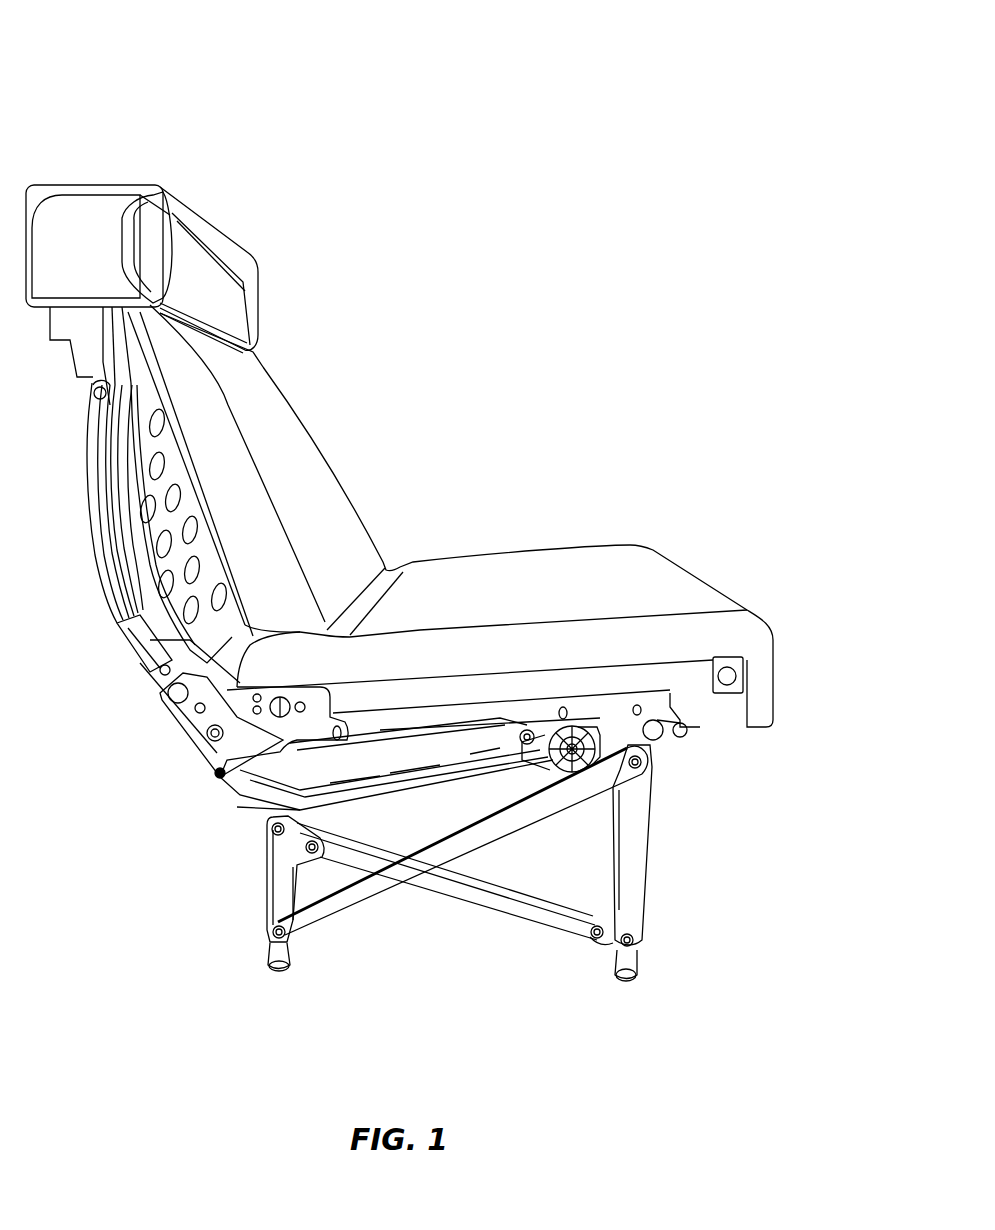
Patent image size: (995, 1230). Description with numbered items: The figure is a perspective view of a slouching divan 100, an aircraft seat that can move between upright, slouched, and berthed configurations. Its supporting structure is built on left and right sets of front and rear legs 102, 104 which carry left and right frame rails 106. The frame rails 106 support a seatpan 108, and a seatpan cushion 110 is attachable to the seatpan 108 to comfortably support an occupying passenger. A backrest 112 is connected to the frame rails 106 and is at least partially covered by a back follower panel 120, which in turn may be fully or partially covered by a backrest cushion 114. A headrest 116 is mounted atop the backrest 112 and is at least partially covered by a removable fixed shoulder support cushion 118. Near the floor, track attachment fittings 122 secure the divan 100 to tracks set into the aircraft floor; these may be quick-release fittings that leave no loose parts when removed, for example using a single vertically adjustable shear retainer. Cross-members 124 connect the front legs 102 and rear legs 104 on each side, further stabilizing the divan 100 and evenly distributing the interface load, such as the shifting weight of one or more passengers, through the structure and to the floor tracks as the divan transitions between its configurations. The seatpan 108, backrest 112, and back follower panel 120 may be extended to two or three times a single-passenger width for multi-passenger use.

The slouching divan 100 is at (87, 59).
The front leg 102 is at (630, 882).
The rear leg 104 is at (277, 906).
The frame rail 106 is at (380, 770).
The seatpan 108 is at (673, 677).
The seatpan cushion 110 is at (628, 551).
The backrest 112 is at (100, 407).
The backrest cushion 114 is at (337, 518).
The headrest 116 is at (100, 198).
The removable fixed shoulder support cushion 118 is at (200, 230).
The back follower panel 120 is at (267, 422).
The track attachment fitting 122 is at (633, 958).
The cross-member 124 is at (453, 883).